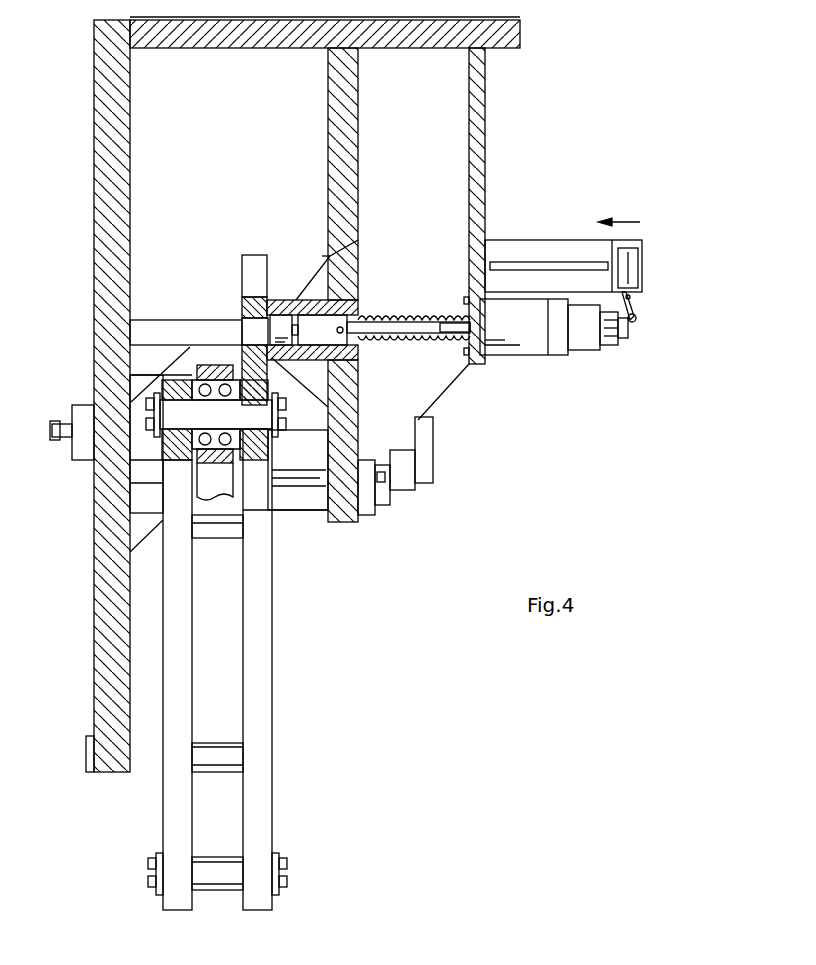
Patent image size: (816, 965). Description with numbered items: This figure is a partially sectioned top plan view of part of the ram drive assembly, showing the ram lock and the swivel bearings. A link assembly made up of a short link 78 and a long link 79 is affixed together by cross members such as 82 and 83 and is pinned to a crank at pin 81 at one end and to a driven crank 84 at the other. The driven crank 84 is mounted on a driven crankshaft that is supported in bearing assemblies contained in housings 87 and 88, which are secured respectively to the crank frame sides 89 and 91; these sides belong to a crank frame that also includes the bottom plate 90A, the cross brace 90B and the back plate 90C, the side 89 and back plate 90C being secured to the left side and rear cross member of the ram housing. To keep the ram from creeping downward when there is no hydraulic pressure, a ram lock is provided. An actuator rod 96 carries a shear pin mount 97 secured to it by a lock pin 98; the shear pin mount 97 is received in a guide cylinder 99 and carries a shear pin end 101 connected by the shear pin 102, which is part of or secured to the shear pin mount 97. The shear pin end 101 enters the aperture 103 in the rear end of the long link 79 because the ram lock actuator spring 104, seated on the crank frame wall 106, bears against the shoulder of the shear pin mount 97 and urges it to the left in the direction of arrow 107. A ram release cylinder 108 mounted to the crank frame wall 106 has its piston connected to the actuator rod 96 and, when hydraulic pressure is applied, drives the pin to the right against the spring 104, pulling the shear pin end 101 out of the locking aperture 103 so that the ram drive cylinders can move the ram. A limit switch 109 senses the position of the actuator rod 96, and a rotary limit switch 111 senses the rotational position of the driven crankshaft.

The short link 78 is at (172, 807).
The long link 79 is at (260, 681).
The pin 81 is at (245, 882).
The cross member 82 is at (228, 758).
The cross member 83 is at (228, 537).
The driven crank 84 is at (218, 487).
The bearing housing 87 is at (145, 466).
The bearing housing 88 is at (305, 475).
The crank frame side 89 is at (103, 161).
The bottom plate 90A is at (248, 160).
The cross brace 90B is at (160, 322).
The back plate 90C is at (186, 47).
The crank frame side 91 is at (350, 432).
The actuator rod 96 is at (417, 322).
The shear pin mount 97 is at (350, 320).
The lock pin 98 is at (355, 348).
The guide cylinder 99 is at (287, 300).
The shear pin end 101 is at (296, 300).
The shear pin 102 is at (300, 330).
The aperture 103 is at (250, 320).
The ram lock actuator spring 104 is at (440, 345).
The crank frame wall 106 is at (480, 147).
The arrow 107 is at (625, 222).
The ram release cylinder 108 is at (522, 347).
The limit switch 109 is at (638, 262).
The rotary limit switch 111 is at (425, 458).